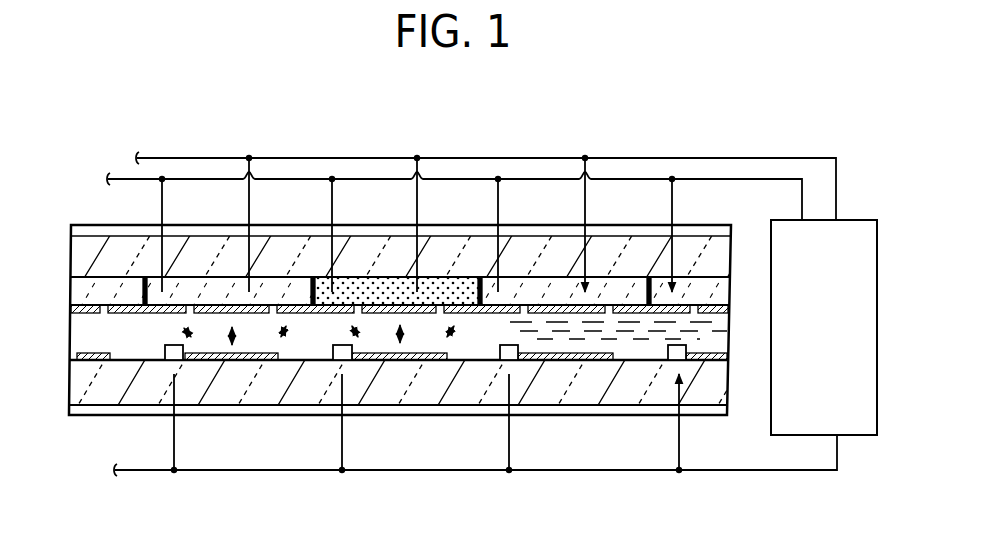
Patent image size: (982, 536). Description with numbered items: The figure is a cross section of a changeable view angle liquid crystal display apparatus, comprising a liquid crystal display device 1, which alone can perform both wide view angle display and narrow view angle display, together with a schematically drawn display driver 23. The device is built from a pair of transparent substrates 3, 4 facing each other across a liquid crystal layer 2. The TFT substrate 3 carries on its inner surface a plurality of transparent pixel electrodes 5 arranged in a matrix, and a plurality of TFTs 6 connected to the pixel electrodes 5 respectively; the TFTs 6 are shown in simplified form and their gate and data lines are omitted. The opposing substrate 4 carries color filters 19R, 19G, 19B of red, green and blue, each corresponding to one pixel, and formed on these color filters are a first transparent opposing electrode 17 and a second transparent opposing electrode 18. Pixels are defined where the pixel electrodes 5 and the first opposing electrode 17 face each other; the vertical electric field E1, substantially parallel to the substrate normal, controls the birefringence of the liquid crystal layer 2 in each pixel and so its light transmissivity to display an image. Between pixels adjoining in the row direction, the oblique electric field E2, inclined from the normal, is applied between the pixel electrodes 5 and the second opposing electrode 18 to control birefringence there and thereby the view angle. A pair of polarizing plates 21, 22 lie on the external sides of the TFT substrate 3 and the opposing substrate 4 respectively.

The liquid crystal display device 1 is at (91, 428).
The liquid crystal layer 2 is at (730, 333).
The TFT substrate 3 is at (78, 376).
The opposing substrate 4 is at (72, 254).
The pixel electrode 5 is at (223, 363).
The TFT 6 is at (163, 362).
The first opposing electrode 17 is at (223, 303).
The second opposing electrode 18 is at (134, 303).
The red color filter 19R is at (112, 300).
The green color filter 19G is at (198, 300).
The blue color filter 19B is at (380, 300).
The polarizing plate 21 is at (712, 416).
The polarizing plate 22 is at (727, 223).
The display driver 23 is at (859, 220).
The vertical electric field E1 is at (395, 336).
The oblique electric field E2 is at (284, 344).